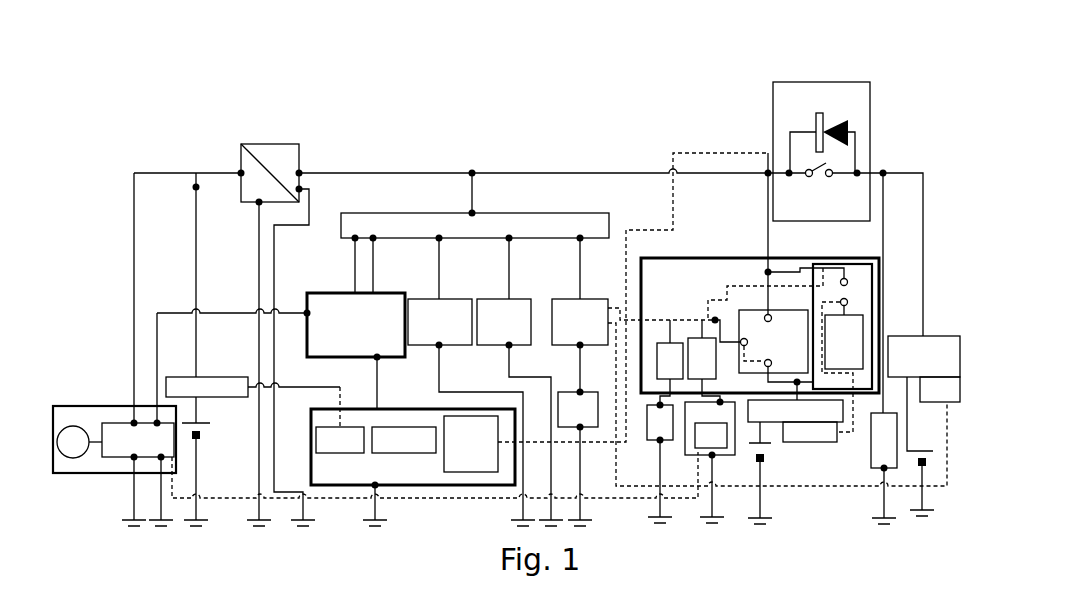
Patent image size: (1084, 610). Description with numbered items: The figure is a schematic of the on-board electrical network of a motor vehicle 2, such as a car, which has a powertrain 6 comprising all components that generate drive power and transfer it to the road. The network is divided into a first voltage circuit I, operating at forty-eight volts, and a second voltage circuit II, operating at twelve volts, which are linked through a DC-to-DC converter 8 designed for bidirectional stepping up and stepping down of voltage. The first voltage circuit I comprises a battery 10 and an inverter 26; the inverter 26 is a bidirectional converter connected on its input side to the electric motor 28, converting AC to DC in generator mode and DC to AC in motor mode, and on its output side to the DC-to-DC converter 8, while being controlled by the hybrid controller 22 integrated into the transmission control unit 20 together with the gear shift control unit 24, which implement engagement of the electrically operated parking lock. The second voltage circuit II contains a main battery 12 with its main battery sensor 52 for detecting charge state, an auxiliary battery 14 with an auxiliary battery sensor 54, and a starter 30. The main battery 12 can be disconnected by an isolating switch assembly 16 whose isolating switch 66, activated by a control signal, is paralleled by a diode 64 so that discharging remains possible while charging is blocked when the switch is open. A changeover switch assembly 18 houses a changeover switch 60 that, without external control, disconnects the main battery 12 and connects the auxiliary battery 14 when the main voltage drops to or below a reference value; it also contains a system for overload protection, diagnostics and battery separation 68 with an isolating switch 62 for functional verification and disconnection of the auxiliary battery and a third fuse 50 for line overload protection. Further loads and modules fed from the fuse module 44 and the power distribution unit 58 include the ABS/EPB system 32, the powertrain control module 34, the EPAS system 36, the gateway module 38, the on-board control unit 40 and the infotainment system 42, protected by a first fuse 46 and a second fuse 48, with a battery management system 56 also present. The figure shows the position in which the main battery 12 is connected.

The motor vehicle 2 is at (898, 53).
The first voltage circuit I is at (164, 143).
The second voltage circuit II is at (323, 143).
The powertrain 6 is at (71, 368).
The DC-to-DC converter 8 is at (268, 144).
The battery 10 is at (195, 397).
The main battery 12 is at (912, 366).
The auxiliary battery 14 is at (781, 420).
The isolating switch assembly 16 is at (871, 110).
The changeover switch assembly 18 is at (882, 272).
The transmission control unit 20 is at (691, 423).
The integrated hybrid controller 22 is at (699, 446).
The gear shift control unit 24 is at (648, 432).
The inverter 26 is at (131, 450).
The electric motor 28 is at (73, 459).
The starter 30 is at (872, 449).
The ABS/EPB system 32 is at (392, 450).
The powertrain control module 34 is at (459, 454).
The EPAS system 36 is at (428, 332).
The gateway module 38 is at (492, 332).
The on-board control unit 40 is at (568, 332).
The infotainment system 42 is at (566, 420).
The fuse module 44 is at (471, 237).
The first fuse 46 is at (690, 367).
The second fuse 48 is at (658, 370).
The third fuse 50 is at (832, 351).
The main battery sensor 52 is at (928, 399).
The auxiliary battery sensor 54 is at (796, 441).
The battery management system 56 is at (328, 450).
The power distribution unit 58 is at (328, 293).
The changeover switch 60 is at (761, 351).
The isolating switch 62 is at (850, 298).
The diode 64 is at (820, 113).
The isolating switch 66 is at (820, 171).
The system for overload protection/diagnostics and battery separation 68 is at (877, 303).